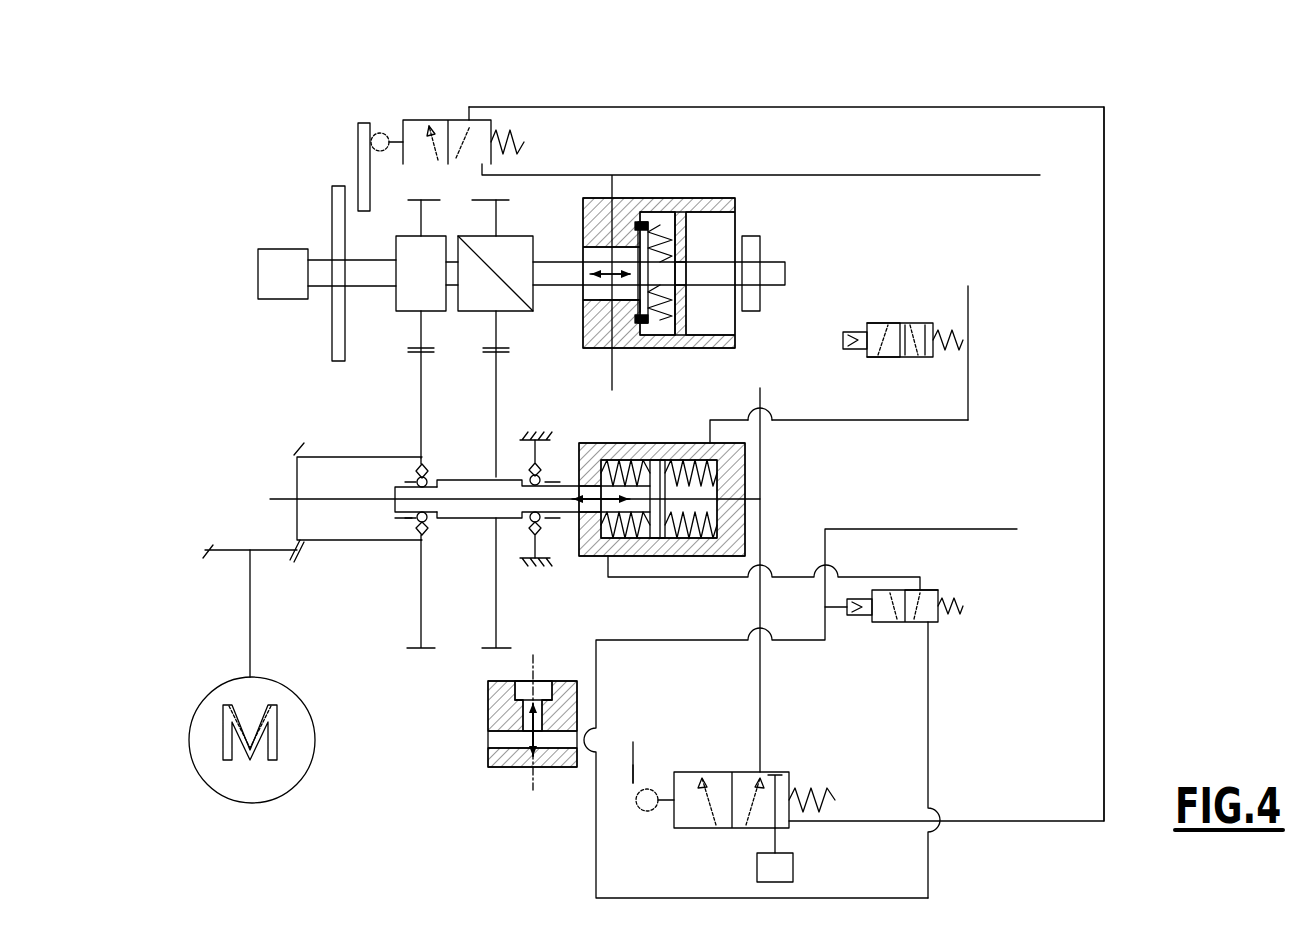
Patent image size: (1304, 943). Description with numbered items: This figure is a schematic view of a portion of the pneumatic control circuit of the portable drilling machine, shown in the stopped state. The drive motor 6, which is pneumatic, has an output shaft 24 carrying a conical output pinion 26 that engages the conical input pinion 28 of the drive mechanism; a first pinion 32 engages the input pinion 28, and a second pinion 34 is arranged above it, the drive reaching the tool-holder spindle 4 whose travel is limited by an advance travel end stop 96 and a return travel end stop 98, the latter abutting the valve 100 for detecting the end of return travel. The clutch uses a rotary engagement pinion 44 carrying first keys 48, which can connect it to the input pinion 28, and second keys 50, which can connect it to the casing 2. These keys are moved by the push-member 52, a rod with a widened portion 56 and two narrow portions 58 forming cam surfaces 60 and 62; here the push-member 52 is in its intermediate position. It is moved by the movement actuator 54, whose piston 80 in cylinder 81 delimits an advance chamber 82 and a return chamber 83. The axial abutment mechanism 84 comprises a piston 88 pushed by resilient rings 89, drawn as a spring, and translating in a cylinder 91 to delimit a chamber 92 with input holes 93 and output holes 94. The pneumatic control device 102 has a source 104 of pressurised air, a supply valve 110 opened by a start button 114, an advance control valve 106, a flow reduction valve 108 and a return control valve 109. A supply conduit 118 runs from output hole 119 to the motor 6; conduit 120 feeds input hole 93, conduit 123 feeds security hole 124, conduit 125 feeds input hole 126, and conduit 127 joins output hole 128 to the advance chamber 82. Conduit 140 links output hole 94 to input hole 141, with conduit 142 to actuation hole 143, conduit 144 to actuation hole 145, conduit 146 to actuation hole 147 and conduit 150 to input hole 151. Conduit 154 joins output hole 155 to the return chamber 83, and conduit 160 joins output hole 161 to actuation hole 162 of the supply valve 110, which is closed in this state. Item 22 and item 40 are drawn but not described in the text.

The casing 2 is at (535, 430).
The tool-holder spindle 4 is at (322, 270).
The drive motor 6 is at (200, 760).
The tool holder 22 is at (258, 272).
The output shaft 24 is at (250, 652).
The conical output pinion 26 is at (216, 550).
The conical input pinion 28 is at (298, 448).
The first pinion 32 is at (408, 302).
The second pinion 34 is at (480, 300).
The output shaft 40 is at (540, 262).
The rotary engagement pinion 44 is at (496, 420).
The first keys 48 is at (426, 476).
The second keys 50 is at (550, 480).
The push-member 52 is at (393, 500).
The movement actuator 54 is at (612, 460).
The widened portion 56 is at (480, 520).
The narrow portions 58 is at (395, 518).
The cam surface 60 is at (415, 485).
The cam surface 62 is at (530, 476).
The piston 80 is at (656, 462).
The cylinder 81 is at (686, 463).
The advance chamber 82 is at (682, 522).
The return chamber 83 is at (630, 540).
The axial abutment mechanism 84 is at (688, 190).
The piston 88 is at (648, 225).
The resilient axial abutment rings 89 is at (665, 322).
The cylinder 91 is at (676, 222).
The chamber for detecting end of advance travel 92 is at (608, 330).
The input holes 93 is at (633, 323).
The output holes 94 is at (633, 222).
The advance travel end stop 96 is at (760, 250).
The return travel end stop 98 is at (332, 205).
The valve for detecting end of return travel 100 is at (428, 116).
The pneumatic control device 102 is at (1188, 316).
The source of pressurised air 104 is at (775, 868).
The advance control valve 106 is at (917, 318).
The flow reduction valve 108 is at (494, 773).
The return control valve 109 is at (946, 597).
The supply valve 110 is at (826, 790).
The start button 114 is at (650, 812).
The supply conduit 118 is at (392, 745).
The output hole 119 is at (760, 772).
The conduit 120 is at (758, 393).
The conduit 123 is at (633, 768).
The security hole 124 is at (674, 777).
The conduit 125 is at (764, 390).
The input hole 126 is at (884, 358).
The conduit 127 is at (840, 420).
The output hole 128 is at (890, 323).
The conduit 140 is at (782, 175).
The input hole 141 is at (928, 626).
The conduit 142 is at (835, 620).
The actuation hole 143 is at (856, 598).
The conduit 144 is at (843, 297).
The actuation hole 145 is at (843, 340).
The conduit 146 is at (542, 681).
The actuation hole 147 is at (545, 681).
The conduit 150 is at (540, 175).
The input hole 151 is at (458, 209).
The conduit 154 is at (726, 578).
The output hole 155 is at (922, 590).
The conduit 160 is at (533, 107).
The output hole 161 is at (470, 118).
The actuation hole 162 is at (790, 826).